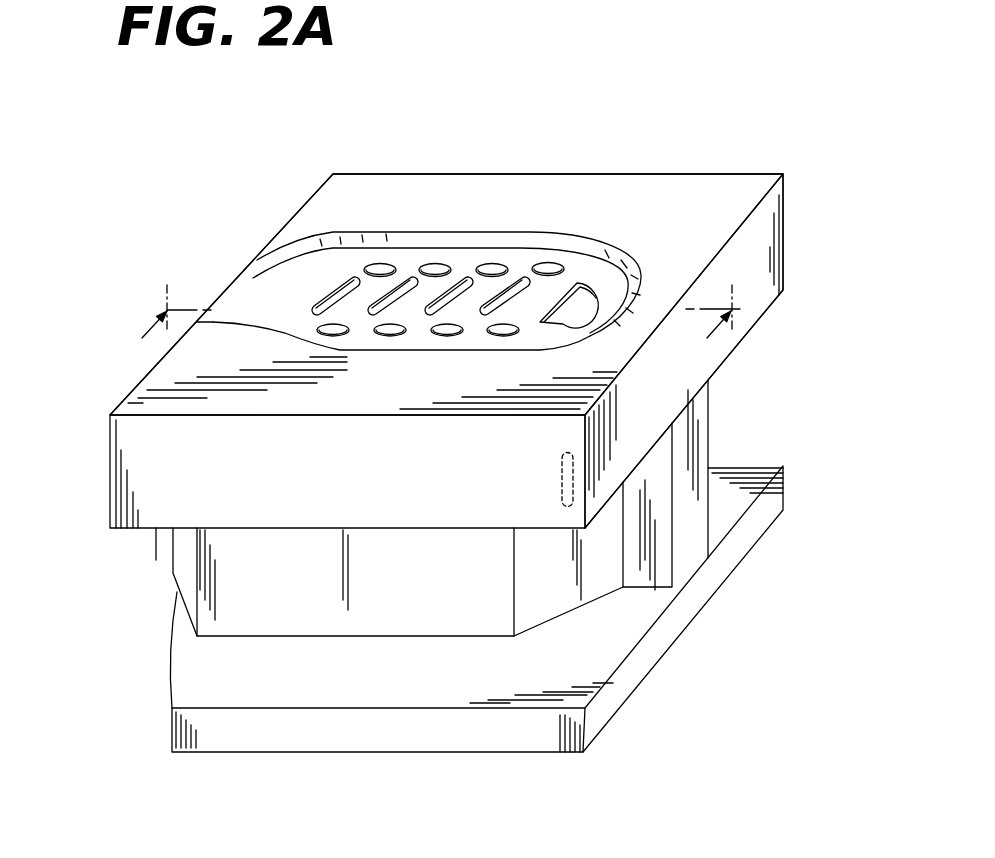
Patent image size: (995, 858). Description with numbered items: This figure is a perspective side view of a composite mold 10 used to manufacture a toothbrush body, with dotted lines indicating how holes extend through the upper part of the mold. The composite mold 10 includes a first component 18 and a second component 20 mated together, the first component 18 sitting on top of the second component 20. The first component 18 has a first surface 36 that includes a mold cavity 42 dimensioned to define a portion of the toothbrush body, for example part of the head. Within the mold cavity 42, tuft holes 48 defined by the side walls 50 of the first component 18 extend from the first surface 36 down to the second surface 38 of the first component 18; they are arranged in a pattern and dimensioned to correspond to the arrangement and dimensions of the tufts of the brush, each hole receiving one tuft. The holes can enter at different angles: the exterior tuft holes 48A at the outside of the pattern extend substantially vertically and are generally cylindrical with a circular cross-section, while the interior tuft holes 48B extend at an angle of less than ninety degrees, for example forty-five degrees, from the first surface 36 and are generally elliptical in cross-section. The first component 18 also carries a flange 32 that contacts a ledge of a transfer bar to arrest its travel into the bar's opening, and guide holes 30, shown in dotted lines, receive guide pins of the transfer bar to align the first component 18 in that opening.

The composite mold 10 is at (563, 128).
The first component 18 is at (770, 168).
The second component 20 is at (789, 479).
The guide holes 30 is at (575, 497).
The flange 32 is at (785, 250).
The first surface 36 is at (690, 187).
The second surface 38 is at (412, 640).
The mold cavity 42 is at (289, 290).
The tuft holes 48 is at (322, 327).
The exterior tuft holes 48A is at (378, 268).
The interior tuft holes 48B is at (454, 290).
The side walls 50 is at (411, 282).